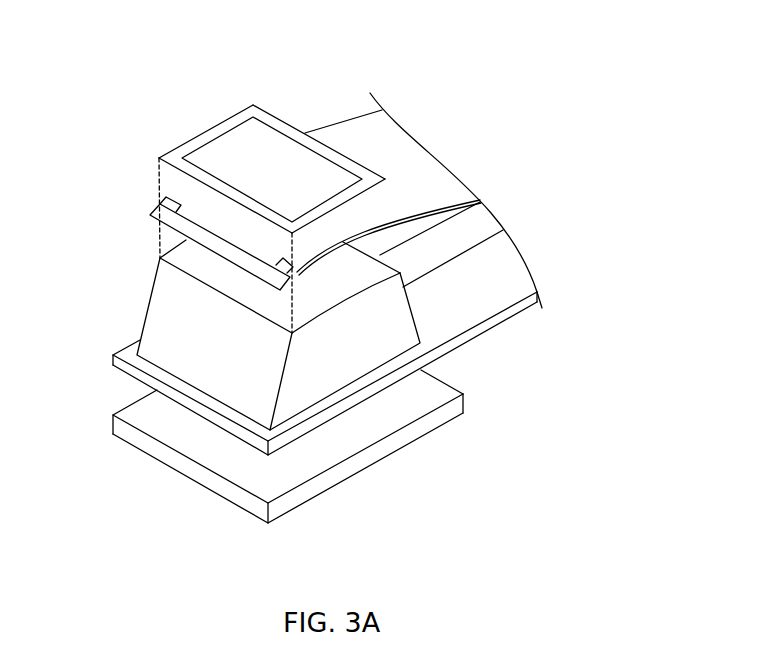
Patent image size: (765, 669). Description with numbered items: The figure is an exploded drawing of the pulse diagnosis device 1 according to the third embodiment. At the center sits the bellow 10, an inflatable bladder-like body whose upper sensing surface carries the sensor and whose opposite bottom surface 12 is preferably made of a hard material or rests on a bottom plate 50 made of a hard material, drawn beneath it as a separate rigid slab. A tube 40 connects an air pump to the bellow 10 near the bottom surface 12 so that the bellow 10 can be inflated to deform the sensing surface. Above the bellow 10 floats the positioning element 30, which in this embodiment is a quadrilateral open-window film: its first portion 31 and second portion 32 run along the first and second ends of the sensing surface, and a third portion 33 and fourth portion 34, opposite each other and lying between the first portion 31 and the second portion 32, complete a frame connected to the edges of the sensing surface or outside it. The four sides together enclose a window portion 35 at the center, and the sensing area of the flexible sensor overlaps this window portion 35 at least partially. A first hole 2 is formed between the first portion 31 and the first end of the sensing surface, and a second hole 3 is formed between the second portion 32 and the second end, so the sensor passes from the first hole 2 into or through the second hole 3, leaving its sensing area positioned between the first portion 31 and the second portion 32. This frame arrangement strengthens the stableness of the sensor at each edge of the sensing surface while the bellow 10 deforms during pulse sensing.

The pulse diagnosis device 1 is at (60, 39).
The first hole 2 is at (337, 182).
The second hole 3 is at (192, 205).
The bellow 10 is at (173, 331).
The bottom surface 12 is at (184, 418).
The positioning element 30 is at (384, 284).
The first portion 31 is at (277, 128).
The second portion 32 is at (190, 167).
The third portion 33 is at (310, 214).
The fourth portion 34 is at (205, 138).
The window portion 35 is at (236, 134).
The tube 40 is at (433, 252).
The bottom plate 50 is at (297, 463).